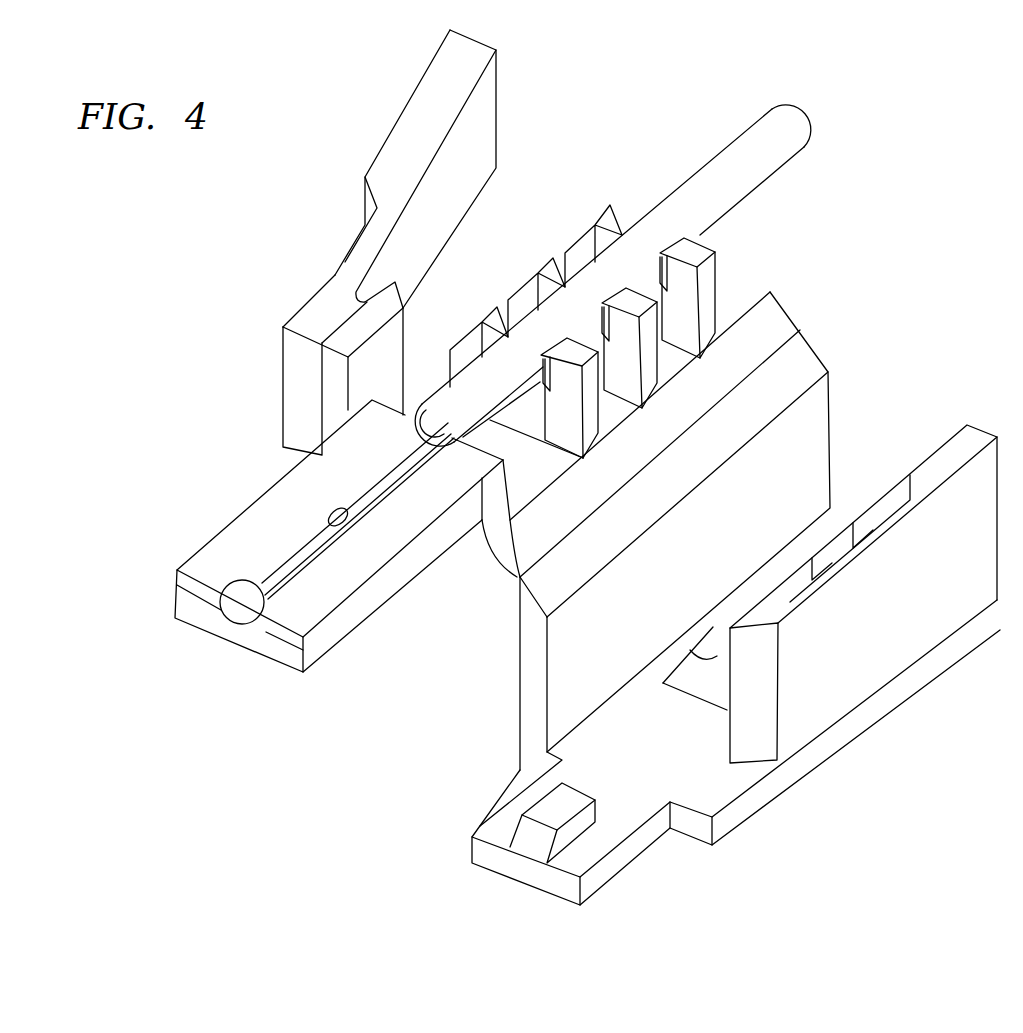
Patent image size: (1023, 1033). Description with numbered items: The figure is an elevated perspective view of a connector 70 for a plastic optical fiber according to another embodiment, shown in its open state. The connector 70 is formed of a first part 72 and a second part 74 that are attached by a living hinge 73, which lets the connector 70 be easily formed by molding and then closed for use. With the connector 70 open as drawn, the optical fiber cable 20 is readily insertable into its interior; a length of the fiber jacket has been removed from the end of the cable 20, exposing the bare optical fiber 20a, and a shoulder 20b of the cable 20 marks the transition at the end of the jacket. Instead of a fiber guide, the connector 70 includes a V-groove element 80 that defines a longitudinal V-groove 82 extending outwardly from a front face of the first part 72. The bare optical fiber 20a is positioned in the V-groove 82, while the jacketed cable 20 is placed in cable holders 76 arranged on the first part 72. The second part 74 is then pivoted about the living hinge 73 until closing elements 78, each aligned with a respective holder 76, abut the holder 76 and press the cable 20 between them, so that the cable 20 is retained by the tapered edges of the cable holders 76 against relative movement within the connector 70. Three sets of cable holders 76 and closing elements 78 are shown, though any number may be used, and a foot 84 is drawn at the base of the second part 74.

The optical fiber cable 20 is at (755, 163).
The bare optical fiber 20a is at (362, 497).
The shoulder of rod 20b is at (447, 404).
The connector 70 is at (432, 655).
The first part 72 is at (740, 300).
The living hinge 73 is at (787, 338).
The second part 74 is at (812, 430).
The cable holders 76 is at (583, 250).
The closing elements 78 is at (835, 532).
The V-groove element 80 is at (208, 570).
The V-groove 82 is at (300, 547).
The foot plate 84 is at (593, 842).